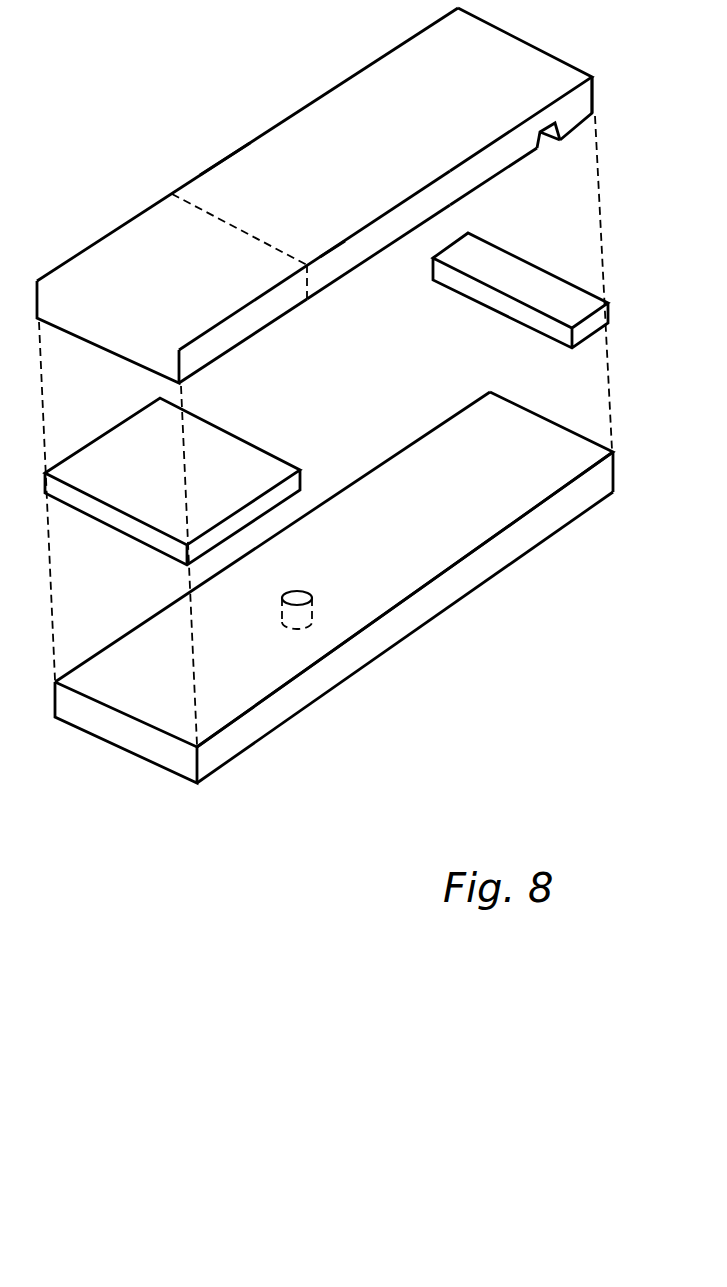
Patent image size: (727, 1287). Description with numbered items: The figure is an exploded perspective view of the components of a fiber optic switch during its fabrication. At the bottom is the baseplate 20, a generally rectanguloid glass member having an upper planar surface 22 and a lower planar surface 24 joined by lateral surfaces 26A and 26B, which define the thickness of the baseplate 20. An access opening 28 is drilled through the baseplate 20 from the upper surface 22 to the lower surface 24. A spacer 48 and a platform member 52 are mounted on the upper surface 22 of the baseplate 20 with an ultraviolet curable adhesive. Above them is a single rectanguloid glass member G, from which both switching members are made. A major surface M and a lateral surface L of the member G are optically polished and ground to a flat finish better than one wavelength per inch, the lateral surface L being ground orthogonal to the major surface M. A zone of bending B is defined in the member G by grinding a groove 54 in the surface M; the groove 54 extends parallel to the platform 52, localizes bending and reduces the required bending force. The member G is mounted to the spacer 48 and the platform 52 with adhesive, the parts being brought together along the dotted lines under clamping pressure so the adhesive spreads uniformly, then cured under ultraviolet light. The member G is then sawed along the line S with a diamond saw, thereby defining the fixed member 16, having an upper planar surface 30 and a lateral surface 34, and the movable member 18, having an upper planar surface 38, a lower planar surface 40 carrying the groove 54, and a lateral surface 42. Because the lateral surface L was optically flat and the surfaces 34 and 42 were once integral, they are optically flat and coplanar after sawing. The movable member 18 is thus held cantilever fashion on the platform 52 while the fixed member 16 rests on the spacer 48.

The fixed switch member 16 is at (105, 236).
The movable switch member 18 is at (342, 82).
The baseplate 20 is at (531, 557).
The upper planar surface 22 is at (445, 522).
The lower planar surface 24 is at (283, 722).
The lateral surface 26A is at (460, 587).
The lateral surface 26B is at (440, 424).
The access opening 28 is at (312, 594).
The upper planar surface 30 is at (188, 292).
The lateral surface 34 is at (236, 331).
The upper planar surface 38 is at (400, 159).
The lower planar surface 40 is at (522, 164).
The lateral surface 42 is at (377, 242).
The spacer 48 is at (132, 415).
The platform member 52 is at (596, 336).
The groove 54 is at (545, 143).
The zone of bending B is at (580, 105).
The rectanguloid glass member G is at (222, 158).
The lateral surface L is at (365, 264).
The major surface M is at (457, 208).
The saw line S is at (309, 293).